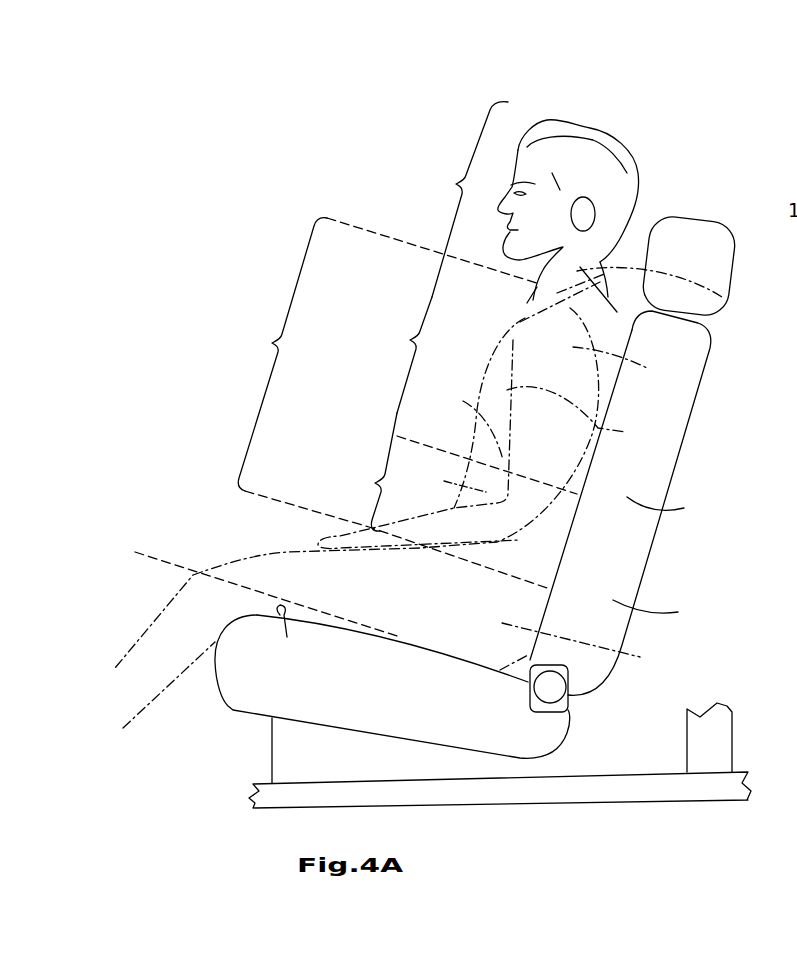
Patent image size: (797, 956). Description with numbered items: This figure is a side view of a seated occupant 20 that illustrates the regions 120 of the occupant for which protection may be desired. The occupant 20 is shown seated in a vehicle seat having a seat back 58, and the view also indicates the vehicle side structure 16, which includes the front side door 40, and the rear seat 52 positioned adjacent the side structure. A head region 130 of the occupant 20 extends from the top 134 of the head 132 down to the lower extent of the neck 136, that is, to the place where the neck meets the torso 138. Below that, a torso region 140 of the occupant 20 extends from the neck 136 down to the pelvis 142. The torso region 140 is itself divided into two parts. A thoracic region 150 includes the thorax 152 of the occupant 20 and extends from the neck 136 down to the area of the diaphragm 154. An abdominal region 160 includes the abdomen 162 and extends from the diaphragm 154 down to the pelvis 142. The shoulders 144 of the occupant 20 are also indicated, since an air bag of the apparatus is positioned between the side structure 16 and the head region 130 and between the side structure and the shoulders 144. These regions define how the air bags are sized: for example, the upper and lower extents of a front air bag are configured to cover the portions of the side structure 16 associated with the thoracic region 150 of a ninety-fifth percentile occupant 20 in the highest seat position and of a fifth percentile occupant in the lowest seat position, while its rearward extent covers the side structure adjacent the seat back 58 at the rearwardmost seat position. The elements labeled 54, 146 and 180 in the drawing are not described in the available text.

The side structure 16 is at (704, 734).
The occupant 20 is at (563, 95).
The front side door 40 is at (615, 553).
The rear seat 52 is at (669, 505).
The seat cushion 54 is at (443, 720).
The seat back 58 is at (659, 611).
The regions 120 is at (333, 174).
The head region 130 is at (463, 199).
The head 132 is at (610, 168).
The top of the head 134 is at (600, 128).
The neck 136 is at (728, 300).
The torso 138 is at (585, 416).
The torso region 140 is at (275, 354).
The pelvis 142 is at (592, 647).
The shoulders 144 is at (630, 365).
The seat back side 146 is at (784, 440).
The thoracic region 150 is at (401, 355).
The thorax 152 is at (506, 338).
The diaphragm 154 is at (469, 418).
The abdominal region 160 is at (361, 472).
The abdomen 162 is at (444, 480).
The deployment angle 180 is at (153, 557).